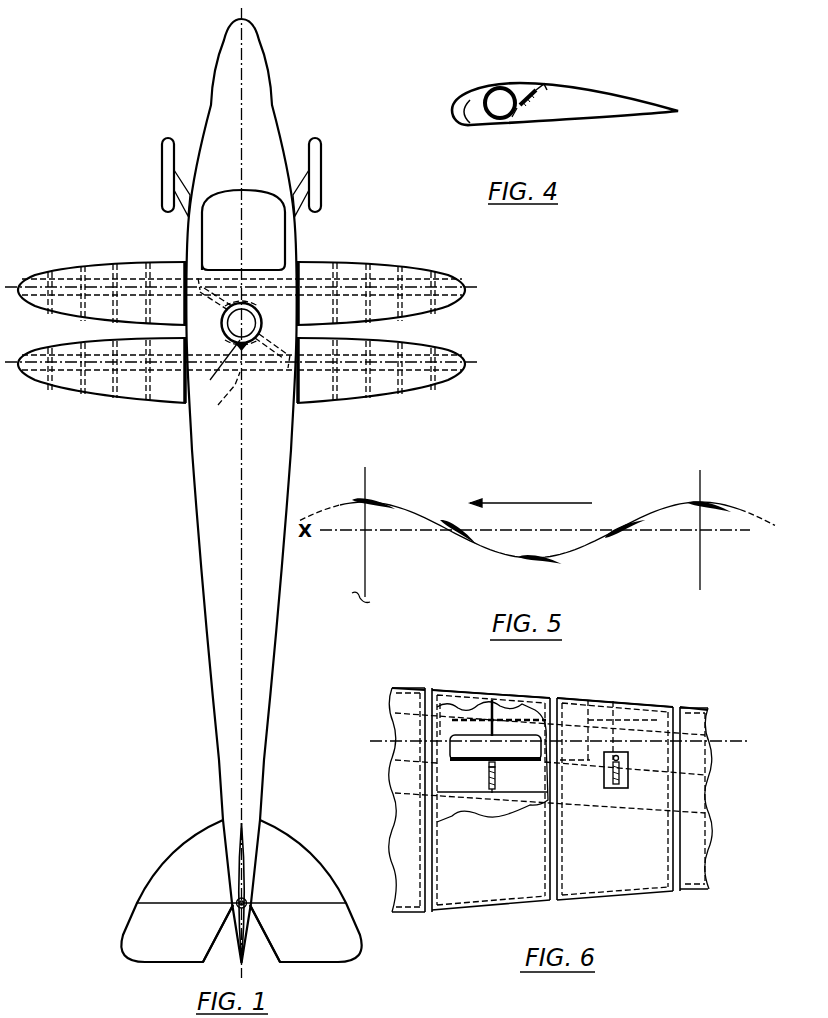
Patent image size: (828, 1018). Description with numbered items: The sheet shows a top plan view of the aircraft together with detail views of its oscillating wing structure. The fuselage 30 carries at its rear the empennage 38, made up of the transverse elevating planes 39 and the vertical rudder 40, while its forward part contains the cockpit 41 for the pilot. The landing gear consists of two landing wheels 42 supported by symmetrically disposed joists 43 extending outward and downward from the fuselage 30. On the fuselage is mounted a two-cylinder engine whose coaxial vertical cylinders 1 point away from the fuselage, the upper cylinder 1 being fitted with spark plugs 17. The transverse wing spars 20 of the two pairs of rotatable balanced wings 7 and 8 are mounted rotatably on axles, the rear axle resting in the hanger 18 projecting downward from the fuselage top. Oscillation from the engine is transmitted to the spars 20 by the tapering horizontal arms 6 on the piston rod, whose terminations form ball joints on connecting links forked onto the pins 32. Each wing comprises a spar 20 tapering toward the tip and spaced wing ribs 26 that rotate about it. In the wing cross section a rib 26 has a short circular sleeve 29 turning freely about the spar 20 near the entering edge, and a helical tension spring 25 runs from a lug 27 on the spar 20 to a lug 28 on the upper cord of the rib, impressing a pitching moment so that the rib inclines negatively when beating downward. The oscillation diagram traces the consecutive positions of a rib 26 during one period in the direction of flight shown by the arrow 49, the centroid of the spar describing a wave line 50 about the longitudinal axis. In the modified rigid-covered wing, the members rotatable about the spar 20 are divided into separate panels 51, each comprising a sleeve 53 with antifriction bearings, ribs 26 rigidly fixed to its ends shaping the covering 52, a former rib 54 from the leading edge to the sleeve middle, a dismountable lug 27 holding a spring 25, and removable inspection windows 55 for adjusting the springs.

In FIG. 1, the cylinder 1 is at (260, 322).
In FIG. 1, the horizontal arms 6 is at (212, 302).
In FIG. 1, the wing 7 is at (70, 273).
In FIG. 1, the wing 8 is at (92, 392).
In FIG. 1, the spark plugs 17 is at (217, 368).
In FIG. 1, the hanger 18 is at (218, 397).
In FIG. 1, the wing spar 20 is at (340, 283).
In FIG. 4, the wing spar 20 is at (500, 119).
In FIG. 6, the wing spar 20 is at (480, 754).
In FIG. 4, the helical tension spring 25 is at (540, 95).
In FIG. 6, the helical tension spring 25 is at (487, 776).
In FIG. 1, the wing rib 26 is at (405, 300).
In FIG. 4, the wing rib 26 is at (630, 98).
In FIG. 6, the wing rib 26 is at (434, 880).
In FIG. 4, the lug 27 is at (516, 116).
In FIG. 6, the lug 27 is at (496, 764).
In FIG. 4, the lug 28 is at (546, 92).
In FIG. 6, the lug 28 is at (621, 770).
In FIG. 4, the sleeve 29 is at (485, 102).
In FIG. 1, the fuselage 30 is at (198, 517).
In FIG. 1, the pins 32 is at (208, 278).
In FIG. 1, the empennage 38 is at (137, 898).
In FIG. 1, the elevating planes 39 is at (224, 933).
In FIG. 1, the vertical rudder 40 is at (238, 948).
In FIG. 1, the cockpit 41 is at (243, 230).
In FIG. 1, the landing wheels 42 is at (162, 185).
In FIG. 1, the joists 43 is at (183, 200).
In FIG. 5, the arrow 49 is at (531, 495).
In FIG. 5, the wave line 50 is at (680, 503).
In FIG. 6, the wing panel 51 is at (408, 688).
In FIG. 6, the wing covering 52 is at (551, 800).
In FIG. 6, the sleeve 53 is at (447, 726).
In FIG. 6, the former rib 54 is at (496, 706).
In FIG. 6, the inspection windows 55 is at (616, 788).